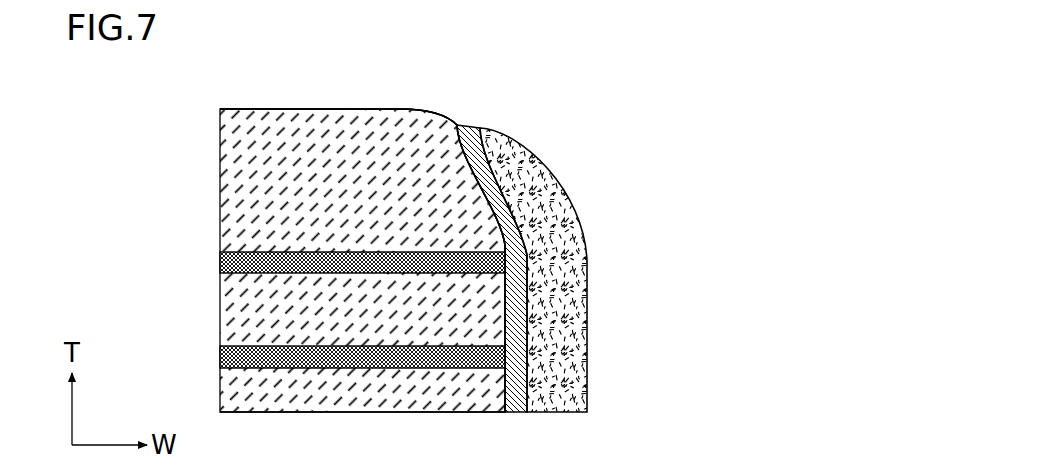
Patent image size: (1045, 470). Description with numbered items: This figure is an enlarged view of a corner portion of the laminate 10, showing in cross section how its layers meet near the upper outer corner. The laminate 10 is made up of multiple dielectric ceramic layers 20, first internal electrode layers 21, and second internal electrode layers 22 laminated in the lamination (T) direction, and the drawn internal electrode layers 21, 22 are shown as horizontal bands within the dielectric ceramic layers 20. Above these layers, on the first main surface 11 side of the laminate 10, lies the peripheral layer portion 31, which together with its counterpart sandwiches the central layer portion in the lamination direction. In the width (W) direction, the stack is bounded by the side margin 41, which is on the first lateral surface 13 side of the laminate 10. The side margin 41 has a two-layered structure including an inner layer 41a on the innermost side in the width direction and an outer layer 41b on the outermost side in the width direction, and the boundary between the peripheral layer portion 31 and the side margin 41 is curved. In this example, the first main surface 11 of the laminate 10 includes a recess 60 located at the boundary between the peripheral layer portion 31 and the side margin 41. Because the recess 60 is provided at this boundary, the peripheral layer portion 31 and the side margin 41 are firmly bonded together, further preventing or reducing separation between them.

The laminate 10 is at (443, 232).
The first main surface 11 is at (252, 108).
The first lateral surface 13 is at (592, 232).
The dielectric ceramic layer 20 is at (228, 308).
The first internal electrode layer 21 is at (220, 258).
The second internal electrode layer 22 is at (220, 355).
The peripheral layer portion 31 is at (205, 109).
The side margin 41 is at (592, 232).
The inner layer 41a is at (522, 278).
The outer layer 41b is at (555, 322).
The recess 60 is at (568, 232).